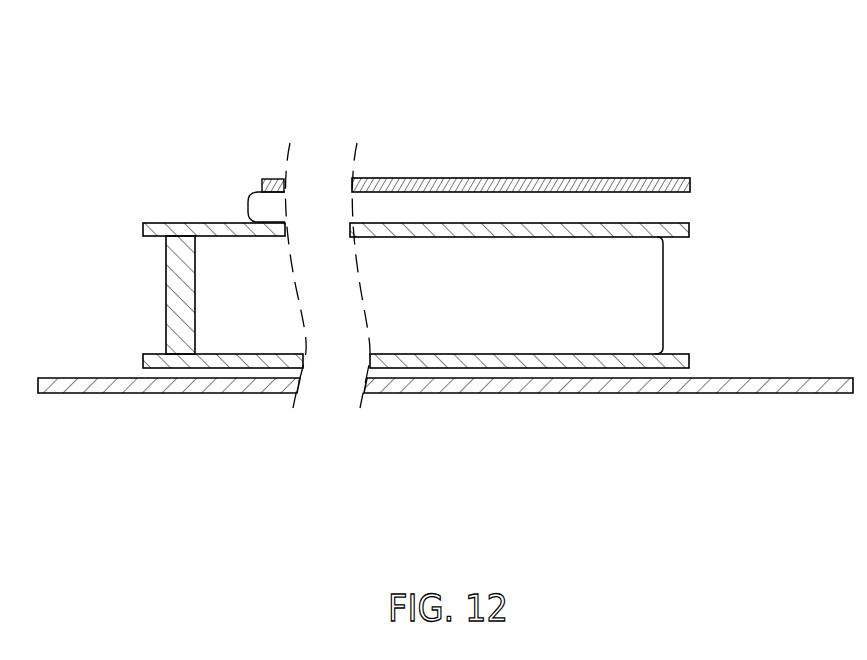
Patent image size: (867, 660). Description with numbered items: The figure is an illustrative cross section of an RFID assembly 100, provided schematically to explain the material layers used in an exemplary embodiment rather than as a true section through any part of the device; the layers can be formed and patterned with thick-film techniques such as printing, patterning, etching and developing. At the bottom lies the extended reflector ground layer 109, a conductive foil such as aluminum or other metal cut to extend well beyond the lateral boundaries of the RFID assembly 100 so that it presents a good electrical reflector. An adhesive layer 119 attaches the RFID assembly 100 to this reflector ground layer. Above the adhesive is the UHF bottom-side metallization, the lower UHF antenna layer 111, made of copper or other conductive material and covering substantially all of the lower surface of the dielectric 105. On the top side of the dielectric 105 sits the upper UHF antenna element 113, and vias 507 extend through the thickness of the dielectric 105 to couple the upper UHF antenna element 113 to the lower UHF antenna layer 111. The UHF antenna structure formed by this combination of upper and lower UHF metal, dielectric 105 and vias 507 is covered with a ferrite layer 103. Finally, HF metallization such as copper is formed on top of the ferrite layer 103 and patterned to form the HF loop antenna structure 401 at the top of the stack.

The RFID assembly 100 is at (207, 85).
The ferrite layer 103 is at (247, 208).
The dielectric 105 is at (666, 296).
The extended reflector ground layer 109 is at (183, 393).
The lower UHF antenna layer 111 is at (682, 354).
The upper UHF antenna element 113 is at (143, 230).
The adhesive layer 119 is at (623, 373).
The HF loop antenna structure 401 is at (470, 178).
The vias 507 is at (182, 291).